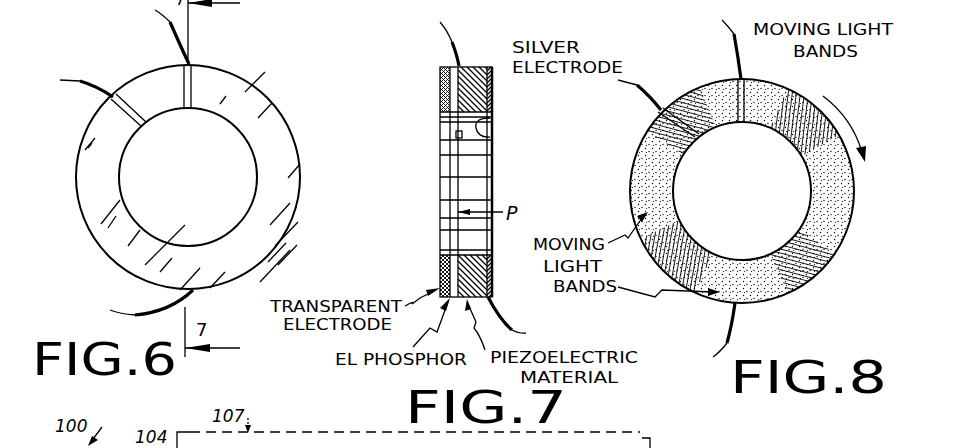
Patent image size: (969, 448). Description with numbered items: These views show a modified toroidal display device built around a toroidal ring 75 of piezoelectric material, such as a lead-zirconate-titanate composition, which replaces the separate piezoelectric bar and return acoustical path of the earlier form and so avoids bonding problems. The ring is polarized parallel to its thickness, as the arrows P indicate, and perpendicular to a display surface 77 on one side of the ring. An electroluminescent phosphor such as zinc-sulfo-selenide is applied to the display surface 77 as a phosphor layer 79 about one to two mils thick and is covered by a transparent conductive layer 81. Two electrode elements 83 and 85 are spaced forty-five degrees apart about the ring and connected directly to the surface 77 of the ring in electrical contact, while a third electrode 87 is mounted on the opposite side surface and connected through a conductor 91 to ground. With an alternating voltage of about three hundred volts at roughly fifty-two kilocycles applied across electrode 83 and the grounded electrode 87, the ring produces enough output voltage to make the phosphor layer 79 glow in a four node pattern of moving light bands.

In FIG. 7, the toroidal ring 75 is at (490, 130).
In FIG. 8, the toroidal ring 75 is at (818, 278).
In FIG. 7, the display surface 77 is at (462, 244).
In FIG. 7, the phosphor layer 79 is at (440, 76).
In FIG. 6, the transparent conductive layer 81 is at (248, 134).
In FIG. 7, the transparent conductive layer 81 is at (440, 92).
In FIG. 8, the transparent conductive layer 81 is at (810, 110).
In FIG. 6, the electrode element 83 is at (193, 68).
In FIG. 7, the electrode element 83 is at (453, 66).
In FIG. 8, the electrode element 83 is at (735, 96).
In FIG. 6, the electrode element 85 is at (144, 74).
In FIG. 7, the electrode element 85 is at (456, 136).
In FIG. 8, the electrode element 85 is at (698, 138).
In FIG. 7, the third electrode 87 is at (488, 270).
In FIG. 6, the conductor 91 is at (151, 302).
In FIG. 7, the conductor 91 is at (518, 333).
In FIG. 8, the conductor 91 is at (720, 347).